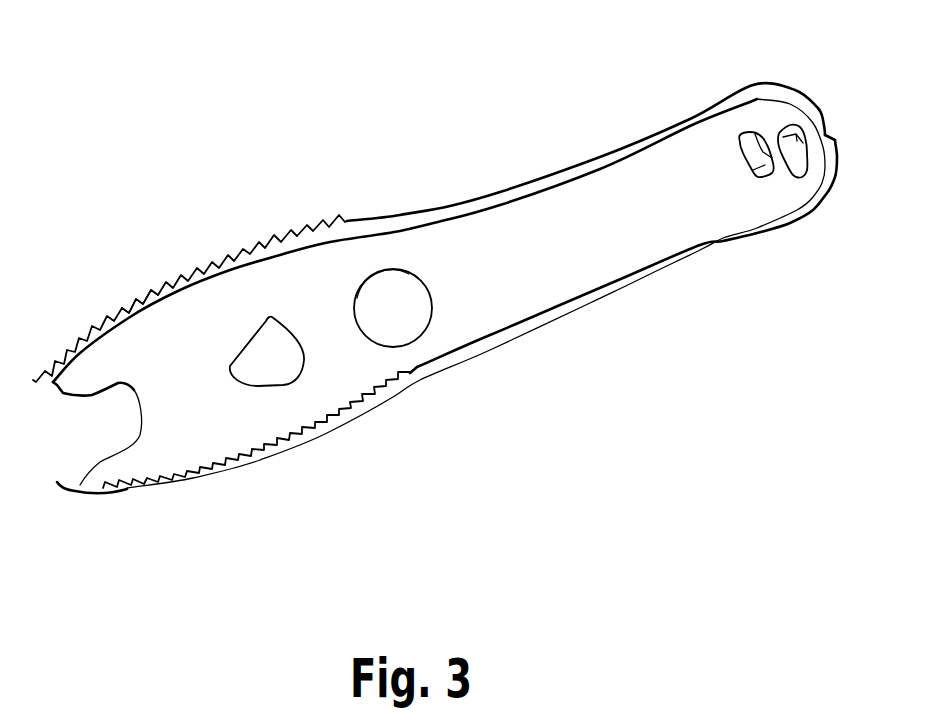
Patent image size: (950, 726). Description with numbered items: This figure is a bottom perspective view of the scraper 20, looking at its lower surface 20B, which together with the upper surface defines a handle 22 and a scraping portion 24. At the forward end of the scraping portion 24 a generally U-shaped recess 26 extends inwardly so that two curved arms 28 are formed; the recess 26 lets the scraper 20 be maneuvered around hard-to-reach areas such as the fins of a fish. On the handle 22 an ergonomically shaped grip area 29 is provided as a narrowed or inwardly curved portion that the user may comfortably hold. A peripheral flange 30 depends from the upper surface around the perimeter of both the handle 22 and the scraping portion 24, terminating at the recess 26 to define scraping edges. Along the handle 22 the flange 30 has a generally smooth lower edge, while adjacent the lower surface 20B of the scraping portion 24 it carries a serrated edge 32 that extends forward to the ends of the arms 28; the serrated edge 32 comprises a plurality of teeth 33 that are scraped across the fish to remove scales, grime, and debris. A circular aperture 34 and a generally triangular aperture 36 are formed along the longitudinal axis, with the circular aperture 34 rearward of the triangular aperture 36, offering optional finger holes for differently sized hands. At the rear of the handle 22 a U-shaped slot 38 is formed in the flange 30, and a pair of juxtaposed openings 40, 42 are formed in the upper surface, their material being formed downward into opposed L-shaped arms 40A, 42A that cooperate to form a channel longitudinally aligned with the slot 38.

The scraper 20 is at (389, 186).
The lower surface 20B is at (598, 200).
The handle 22 is at (858, 282).
The scraping portion 24 is at (447, 454).
The recess 26 is at (108, 427).
The curved arms 28 is at (90, 380).
The grip area 29 is at (643, 270).
The peripheral flange 30 is at (517, 192).
The serrated edge 32 is at (205, 277).
The teeth 33 is at (158, 292).
The circular aperture 34 is at (413, 277).
The triangular aperture 36 is at (270, 317).
The U-shaped slot 38 is at (830, 138).
The opening 40 is at (740, 135).
The arm 40A is at (760, 147).
The opening 42 is at (803, 177).
The arm 42A is at (797, 132).